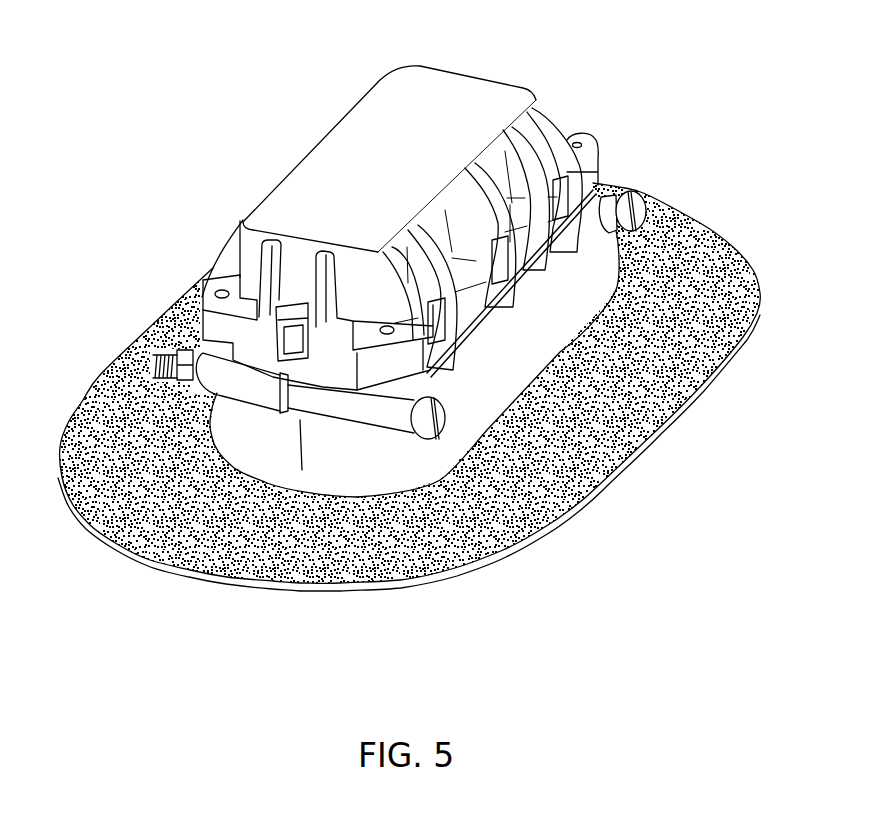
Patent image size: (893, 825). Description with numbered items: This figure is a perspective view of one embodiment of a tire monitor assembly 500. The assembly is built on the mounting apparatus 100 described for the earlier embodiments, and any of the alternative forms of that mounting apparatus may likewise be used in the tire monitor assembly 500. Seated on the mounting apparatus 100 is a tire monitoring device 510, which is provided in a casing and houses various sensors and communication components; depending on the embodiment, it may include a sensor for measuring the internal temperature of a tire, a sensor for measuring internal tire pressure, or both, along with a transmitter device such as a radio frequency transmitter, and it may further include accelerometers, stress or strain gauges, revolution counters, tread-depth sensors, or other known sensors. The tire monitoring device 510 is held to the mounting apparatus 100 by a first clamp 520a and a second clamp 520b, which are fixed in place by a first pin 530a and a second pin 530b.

The tire monitor assembly 500 is at (249, 112).
The mounting apparatus 100 is at (657, 389).
The tire monitoring device 510 is at (469, 91).
The first clamp 520a is at (515, 360).
The second clamp 520b is at (229, 428).
The first pin 530a is at (447, 418).
The second pin 530b is at (642, 204).